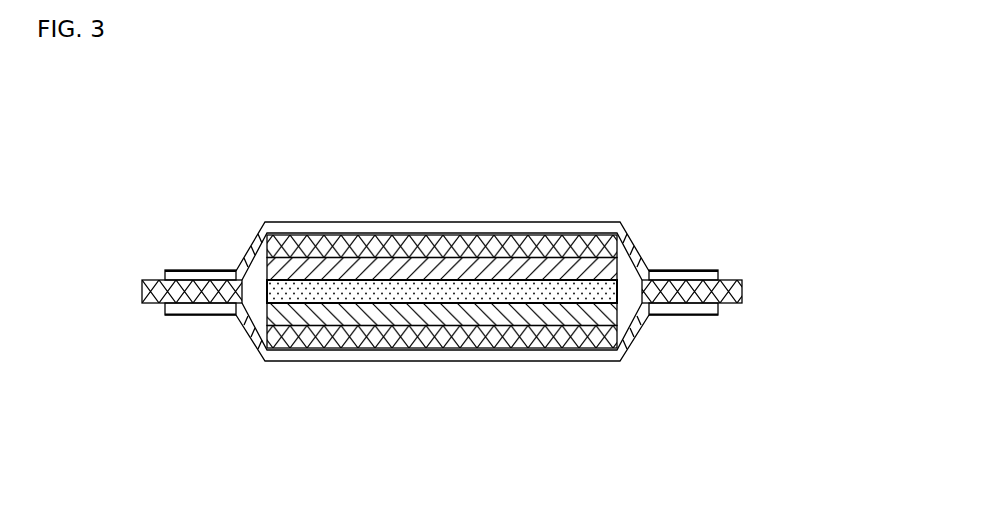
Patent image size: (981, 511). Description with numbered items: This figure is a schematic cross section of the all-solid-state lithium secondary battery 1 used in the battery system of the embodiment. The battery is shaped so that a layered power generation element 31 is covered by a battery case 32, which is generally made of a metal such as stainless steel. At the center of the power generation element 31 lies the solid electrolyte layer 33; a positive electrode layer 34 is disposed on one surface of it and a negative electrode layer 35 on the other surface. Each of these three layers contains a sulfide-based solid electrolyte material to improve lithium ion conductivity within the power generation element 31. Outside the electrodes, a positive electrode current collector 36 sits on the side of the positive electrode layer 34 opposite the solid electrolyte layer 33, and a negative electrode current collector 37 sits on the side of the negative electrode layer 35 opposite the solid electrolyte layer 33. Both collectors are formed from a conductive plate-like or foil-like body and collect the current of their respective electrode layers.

The all-solid-state lithium secondary battery 1 is at (659, 155).
The power generation element 31 is at (542, 418).
The battery case 32 is at (373, 228).
The solid electrolyte layer 33 is at (412, 293).
The positive electrode layer 34 is at (355, 270).
The negative electrode layer 35 is at (485, 313).
The positive electrode current collector 36 is at (315, 247).
The negative electrode current collector 37 is at (537, 335).